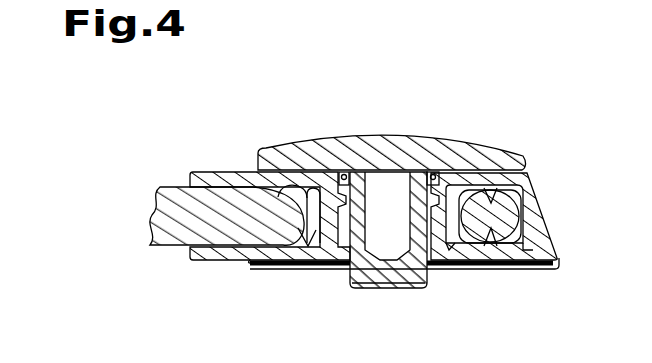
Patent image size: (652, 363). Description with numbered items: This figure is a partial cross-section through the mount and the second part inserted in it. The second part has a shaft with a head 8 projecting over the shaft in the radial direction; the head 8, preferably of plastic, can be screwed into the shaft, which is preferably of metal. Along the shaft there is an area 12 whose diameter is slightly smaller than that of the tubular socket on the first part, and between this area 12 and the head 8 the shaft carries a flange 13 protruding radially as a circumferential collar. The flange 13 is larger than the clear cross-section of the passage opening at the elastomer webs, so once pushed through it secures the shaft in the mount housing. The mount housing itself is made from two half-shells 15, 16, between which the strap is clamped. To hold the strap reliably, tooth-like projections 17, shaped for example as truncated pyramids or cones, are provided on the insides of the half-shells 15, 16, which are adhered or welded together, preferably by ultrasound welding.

The head 8 is at (415, 148).
The area 12 is at (424, 273).
The flange 13 is at (450, 184).
The half-shell 15 is at (213, 178).
The half-shell 16 is at (267, 268).
The projections 17 is at (284, 197).